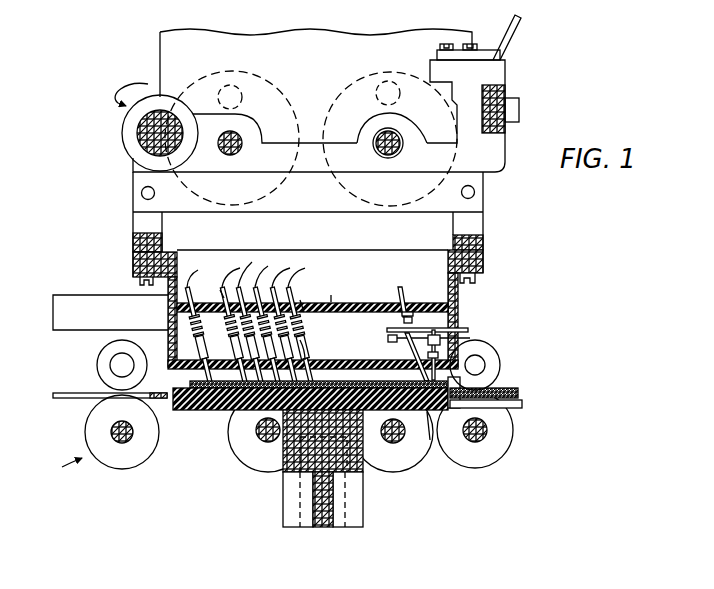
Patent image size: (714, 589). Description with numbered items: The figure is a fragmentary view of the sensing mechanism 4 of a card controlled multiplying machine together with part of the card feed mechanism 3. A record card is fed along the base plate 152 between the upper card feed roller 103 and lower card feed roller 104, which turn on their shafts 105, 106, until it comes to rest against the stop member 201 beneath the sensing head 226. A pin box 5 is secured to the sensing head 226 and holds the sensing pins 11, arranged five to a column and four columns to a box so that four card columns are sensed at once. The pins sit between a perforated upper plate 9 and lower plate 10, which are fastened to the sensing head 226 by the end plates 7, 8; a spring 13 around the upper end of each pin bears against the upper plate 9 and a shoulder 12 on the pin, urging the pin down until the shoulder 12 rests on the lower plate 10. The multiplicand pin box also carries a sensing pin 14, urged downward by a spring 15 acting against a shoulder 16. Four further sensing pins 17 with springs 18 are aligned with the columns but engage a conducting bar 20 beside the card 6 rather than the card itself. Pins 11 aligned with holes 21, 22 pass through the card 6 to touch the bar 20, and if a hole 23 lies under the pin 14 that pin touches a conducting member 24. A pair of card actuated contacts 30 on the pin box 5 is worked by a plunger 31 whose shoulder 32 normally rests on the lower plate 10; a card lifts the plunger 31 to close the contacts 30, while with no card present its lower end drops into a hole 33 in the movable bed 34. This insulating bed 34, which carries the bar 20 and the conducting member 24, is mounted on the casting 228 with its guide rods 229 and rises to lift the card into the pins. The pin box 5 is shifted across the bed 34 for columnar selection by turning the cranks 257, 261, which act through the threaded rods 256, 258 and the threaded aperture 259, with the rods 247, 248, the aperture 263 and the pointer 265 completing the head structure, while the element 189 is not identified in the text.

The card feed mechanism 3 is at (62, 468).
The sensing mechanism 4 is at (131, 91).
The pin box 5 is at (428, 291).
The record card 6 is at (356, 360).
The end plate 7 is at (482, 260).
The end plate 8 is at (165, 262).
The upper plate 9 is at (333, 303).
The lower plate 10 is at (340, 360).
The sensing pins 11 is at (258, 283).
The shoulder 12 is at (331, 302).
The spring 13 is at (324, 312).
The sensing pin 14 is at (402, 287).
The spring 15 is at (402, 318).
The shoulder 16 is at (413, 345).
The sensing pins 17 is at (197, 273).
The springs 18 is at (219, 288).
The bar 20 is at (197, 413).
The hole 21 is at (223, 413).
The hole 22 is at (273, 422).
The hole 23 is at (428, 412).
The conducting member 24 is at (413, 413).
The card actuated contacts 30 is at (388, 337).
The plunger 31 is at (441, 345).
The shoulder 32 is at (462, 355).
The hole 33 is at (440, 440).
The movable bed 34 is at (180, 420).
The upper card feed roller 103 is at (108, 350).
The lower card feed roller 104 is at (98, 433).
The shaft 105 is at (118, 362).
The shaft 106 is at (122, 424).
The base plate 152 is at (72, 393).
The feed table 189 is at (77, 312).
The stop member 201 is at (458, 383).
The sensing head 226 is at (462, 226).
The casting 228 is at (320, 513).
The guide rods 229 is at (290, 493).
The rod 247 is at (163, 122).
The rod 248 is at (498, 92).
The threaded rod 256 is at (377, 143).
The crank 257 is at (386, 82).
The threaded rod 258 is at (245, 140).
The threaded aperture 259 is at (242, 135).
The crank 261 is at (242, 92).
The aperture 263 is at (383, 132).
The pointer 265 is at (500, 26).